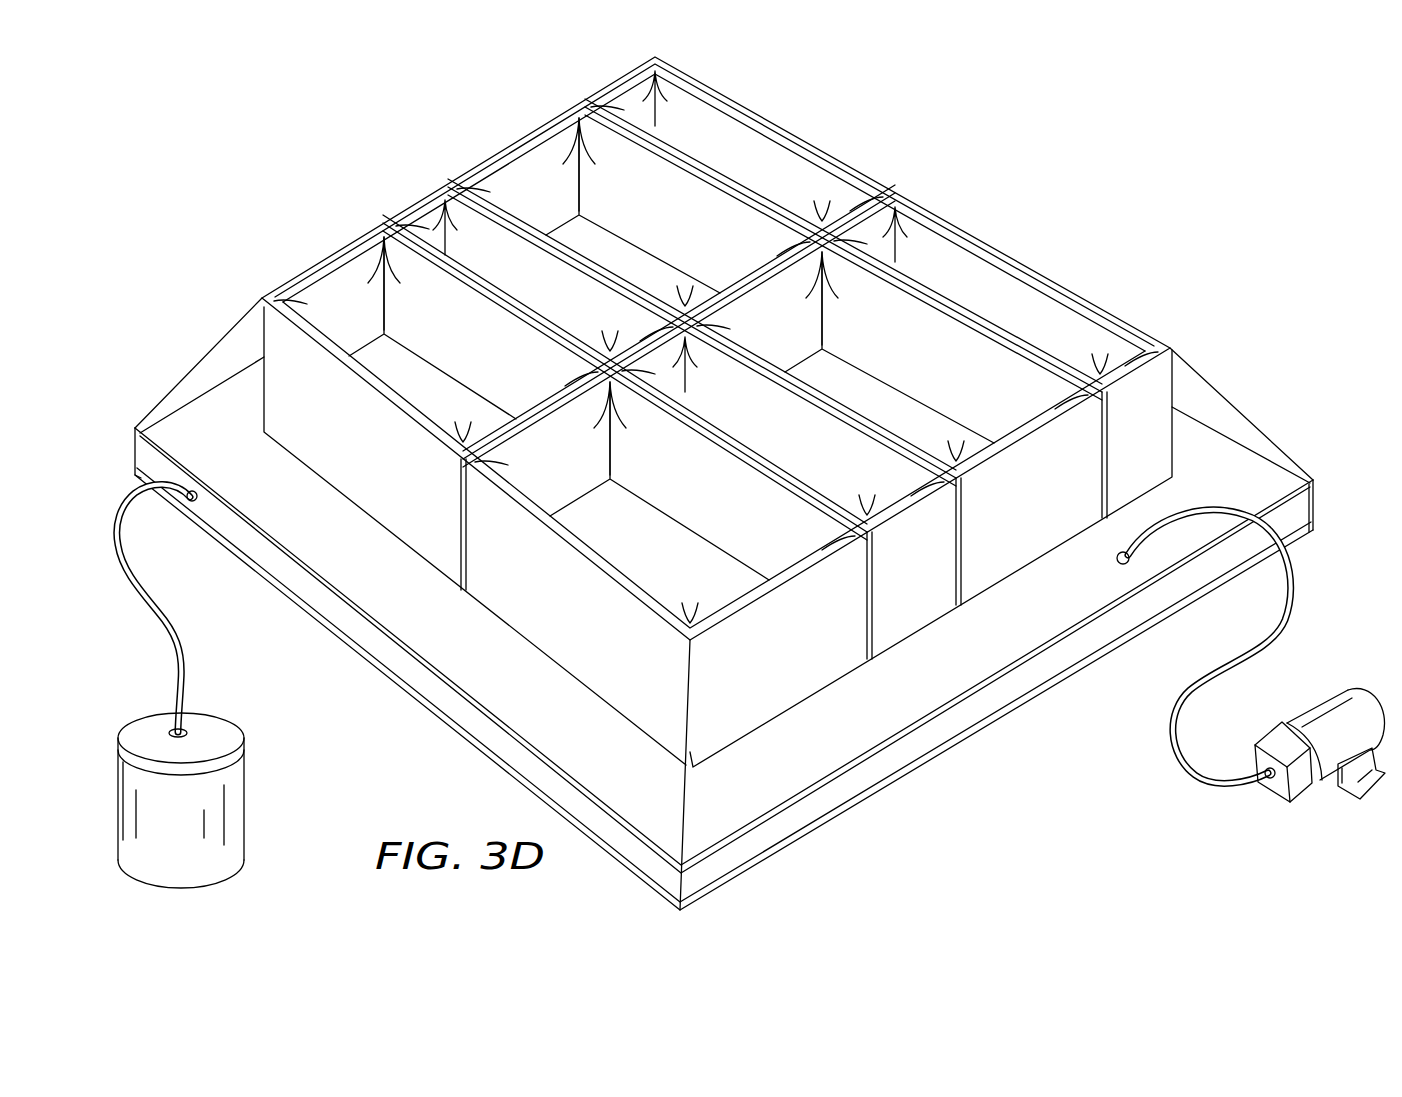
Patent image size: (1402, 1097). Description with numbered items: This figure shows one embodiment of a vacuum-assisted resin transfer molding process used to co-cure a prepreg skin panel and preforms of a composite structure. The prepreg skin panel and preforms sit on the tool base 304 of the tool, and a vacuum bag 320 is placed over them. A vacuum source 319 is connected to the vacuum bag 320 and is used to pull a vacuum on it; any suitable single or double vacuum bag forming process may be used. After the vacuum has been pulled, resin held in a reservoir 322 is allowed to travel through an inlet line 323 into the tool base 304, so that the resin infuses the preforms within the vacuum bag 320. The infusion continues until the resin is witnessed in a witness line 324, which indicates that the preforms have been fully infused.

The tool base 304 is at (834, 797).
The vacuum source 319 is at (1358, 707).
The vacuum bag 320 is at (1192, 393).
The reservoir 322 is at (150, 878).
The inlet line 323 is at (122, 379).
The witness line 324 is at (1288, 593).